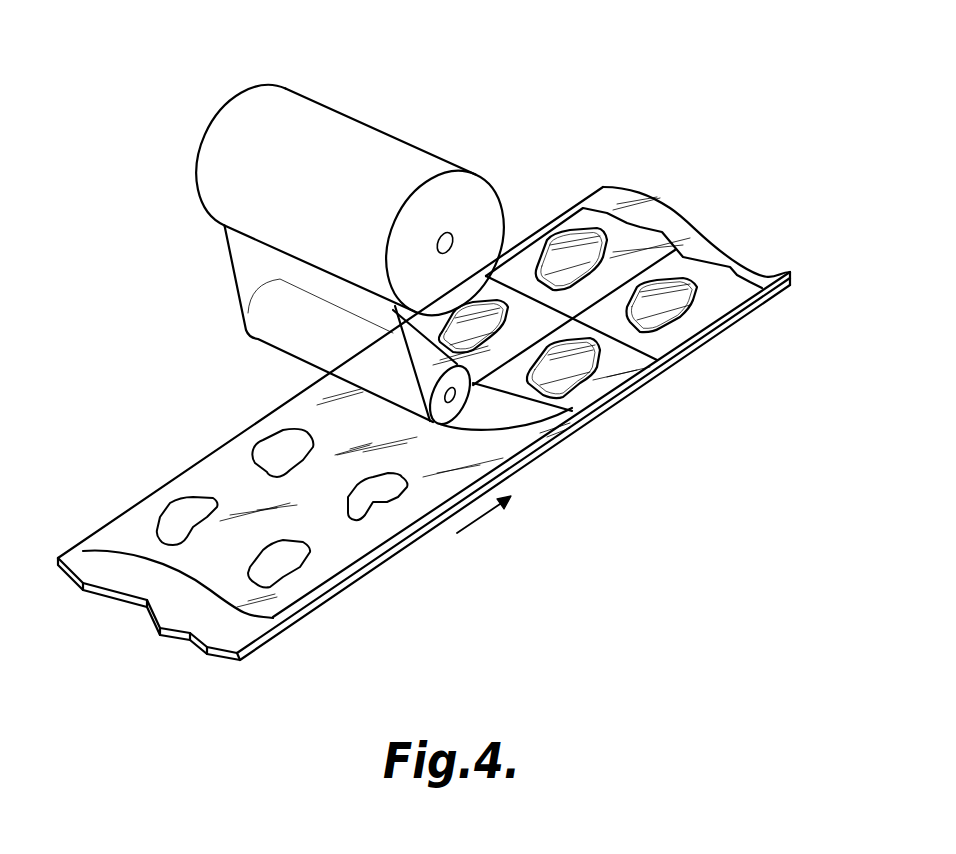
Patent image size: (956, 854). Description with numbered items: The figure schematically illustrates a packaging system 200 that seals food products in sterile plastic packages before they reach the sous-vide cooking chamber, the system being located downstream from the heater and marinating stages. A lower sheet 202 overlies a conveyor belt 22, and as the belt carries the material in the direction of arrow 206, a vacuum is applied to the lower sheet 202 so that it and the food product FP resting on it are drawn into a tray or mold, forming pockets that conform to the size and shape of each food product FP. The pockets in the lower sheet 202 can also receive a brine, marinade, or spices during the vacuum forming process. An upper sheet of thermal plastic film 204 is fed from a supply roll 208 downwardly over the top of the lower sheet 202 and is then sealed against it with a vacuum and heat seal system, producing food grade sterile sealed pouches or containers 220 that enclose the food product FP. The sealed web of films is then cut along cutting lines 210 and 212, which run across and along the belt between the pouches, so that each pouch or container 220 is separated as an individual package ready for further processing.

The packaging system 200 is at (478, 30).
The conveyor belt 22 is at (260, 637).
The lower sheet 202 is at (758, 272).
The upper sheet of thermal plastic film 204 is at (223, 268).
The arrow 206 is at (485, 514).
The supply roll 208 is at (437, 151).
The cutting line 210 is at (537, 413).
The cutting line 212 is at (665, 292).
The pouch or container 220 is at (680, 278).
The food product FP is at (272, 448).